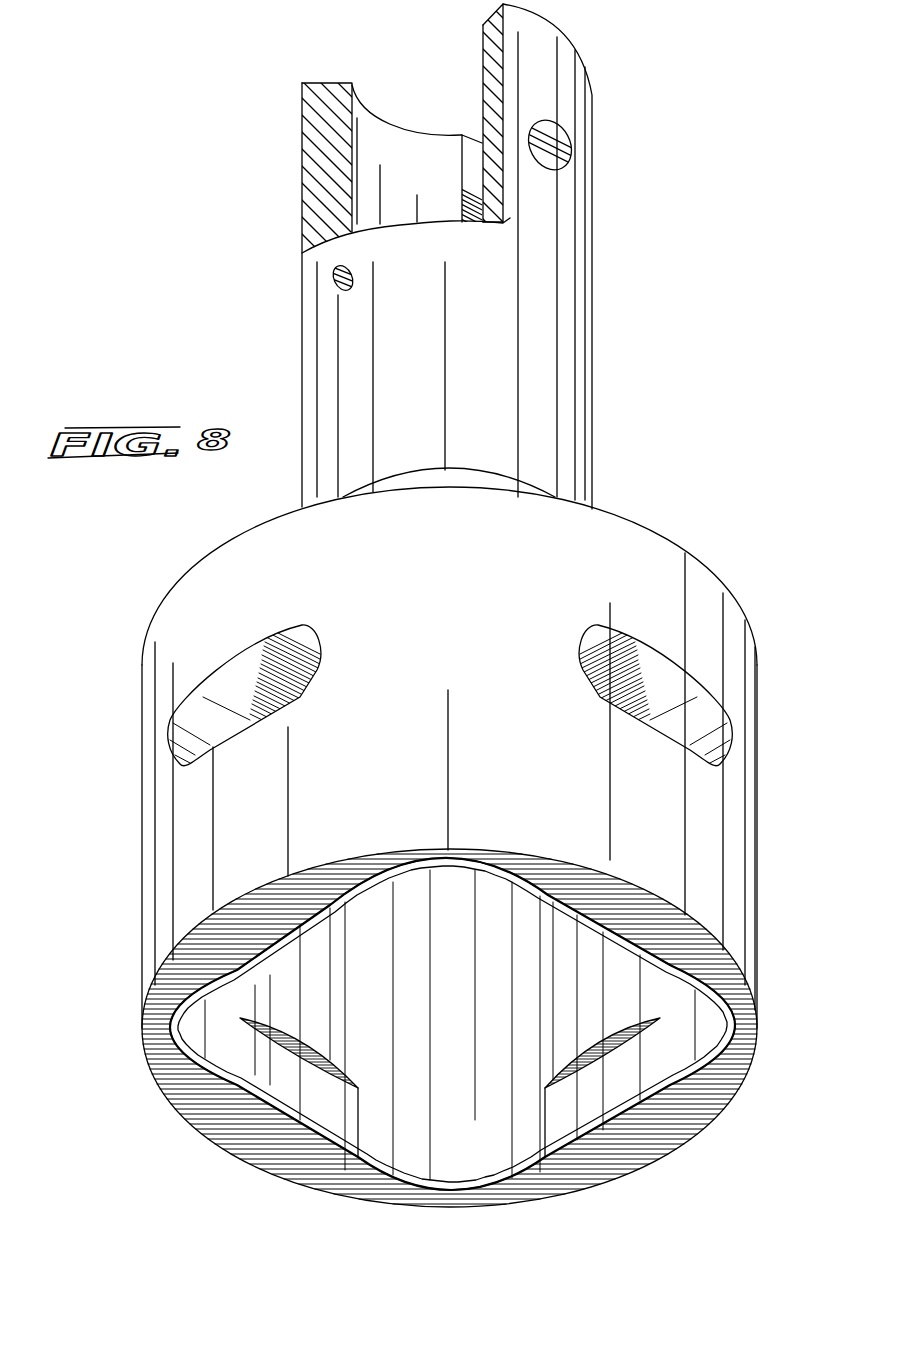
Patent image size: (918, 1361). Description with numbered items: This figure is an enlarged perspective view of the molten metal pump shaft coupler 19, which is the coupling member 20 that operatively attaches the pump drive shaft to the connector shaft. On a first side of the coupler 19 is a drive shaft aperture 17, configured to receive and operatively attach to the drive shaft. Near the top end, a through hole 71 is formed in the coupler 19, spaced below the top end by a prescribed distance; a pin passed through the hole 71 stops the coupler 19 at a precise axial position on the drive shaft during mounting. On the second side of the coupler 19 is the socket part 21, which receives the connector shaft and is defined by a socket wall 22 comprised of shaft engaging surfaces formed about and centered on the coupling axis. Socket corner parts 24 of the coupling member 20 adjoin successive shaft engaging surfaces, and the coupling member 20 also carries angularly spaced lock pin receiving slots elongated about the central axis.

The drive shaft aperture 17 is at (368, 178).
The molten metal pump shaft coupler 19 is at (636, 412).
The coupling member 20 is at (650, 528).
The socket part 21 is at (607, 945).
The socket wall 22 is at (300, 942).
The socket corner parts 24 is at (460, 872).
The through hole 71 is at (333, 279).